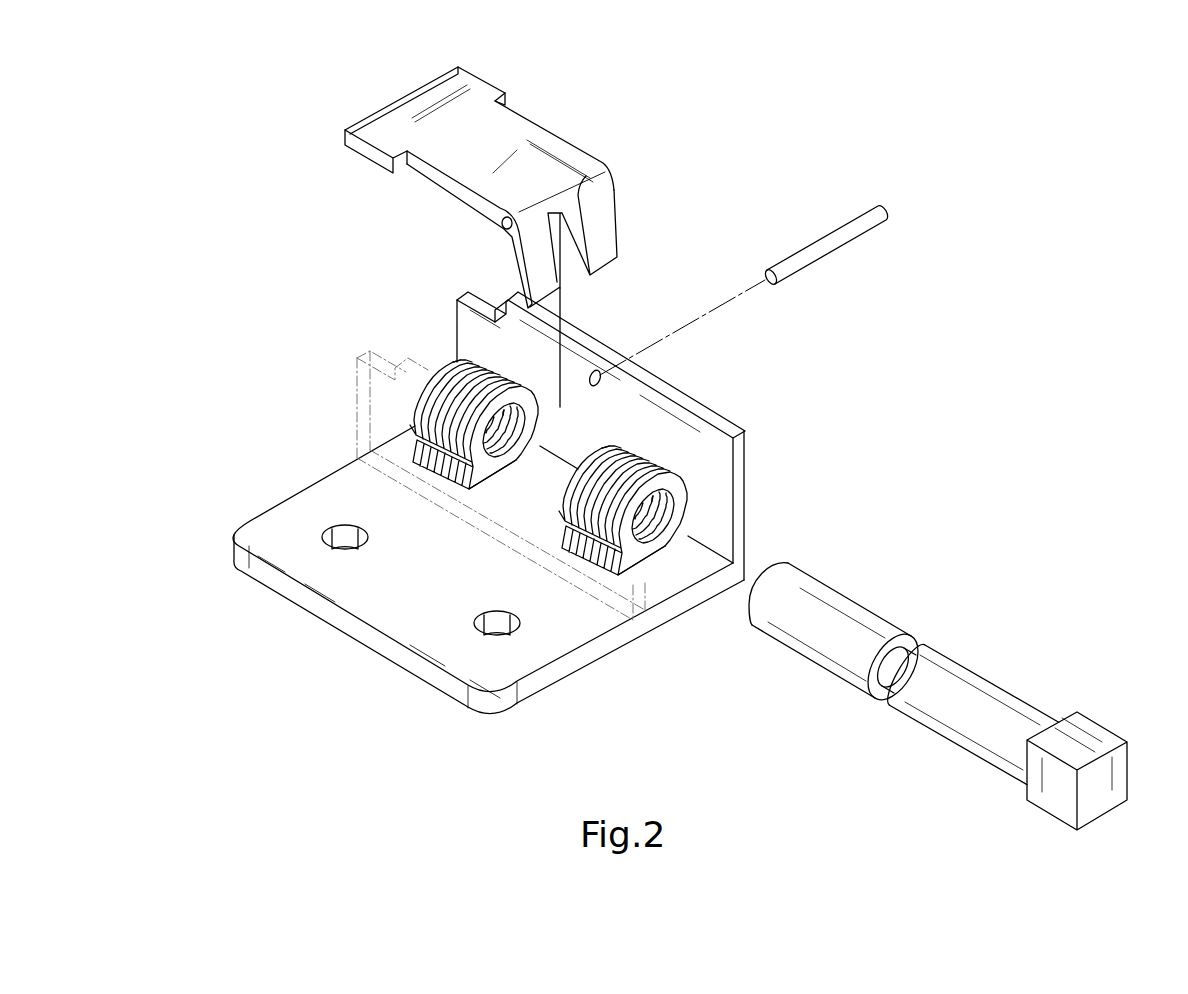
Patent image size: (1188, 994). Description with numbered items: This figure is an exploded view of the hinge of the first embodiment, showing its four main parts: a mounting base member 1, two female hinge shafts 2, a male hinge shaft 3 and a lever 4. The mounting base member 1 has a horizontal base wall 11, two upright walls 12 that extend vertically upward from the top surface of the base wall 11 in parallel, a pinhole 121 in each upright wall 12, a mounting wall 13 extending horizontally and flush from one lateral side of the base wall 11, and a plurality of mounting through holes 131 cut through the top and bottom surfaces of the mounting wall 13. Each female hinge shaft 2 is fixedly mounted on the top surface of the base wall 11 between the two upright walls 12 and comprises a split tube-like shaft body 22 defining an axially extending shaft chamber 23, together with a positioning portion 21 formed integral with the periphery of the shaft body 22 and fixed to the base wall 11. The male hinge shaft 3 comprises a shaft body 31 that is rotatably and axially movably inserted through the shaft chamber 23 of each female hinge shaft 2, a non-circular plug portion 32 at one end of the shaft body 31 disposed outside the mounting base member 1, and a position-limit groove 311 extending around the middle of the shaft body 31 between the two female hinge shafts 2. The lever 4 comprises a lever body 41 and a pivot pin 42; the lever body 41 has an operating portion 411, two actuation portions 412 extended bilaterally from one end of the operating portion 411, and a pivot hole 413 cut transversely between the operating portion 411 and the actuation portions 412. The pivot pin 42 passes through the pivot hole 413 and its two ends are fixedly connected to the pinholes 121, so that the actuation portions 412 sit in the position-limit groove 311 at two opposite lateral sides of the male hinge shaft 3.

The mounting base member 1 is at (296, 484).
The horizontal base wall 11 is at (397, 445).
The upright wall 12 is at (456, 296).
The pinhole 121 is at (600, 378).
The mounting wall 13 is at (270, 527).
The mounting through hole 131 is at (345, 533).
The female hinge shaft 2 is at (440, 358).
The positioning portion 21 is at (652, 560).
The split tube-like shaft body 22 is at (455, 358).
The axially extending shaft chamber 23 is at (668, 516).
The male hinge shaft 3 is at (1038, 697).
The shaft body 31 is at (967, 680).
The position-limit groove 311 is at (921, 643).
The non-circular plug portion 32 is at (1095, 733).
The lever 4 is at (575, 112).
The lever body 41 is at (530, 110).
The operating portion 411 is at (415, 100).
The actuation portion 412 is at (532, 262).
The pivot hole 413 is at (500, 222).
The pivot pin 42 is at (832, 242).